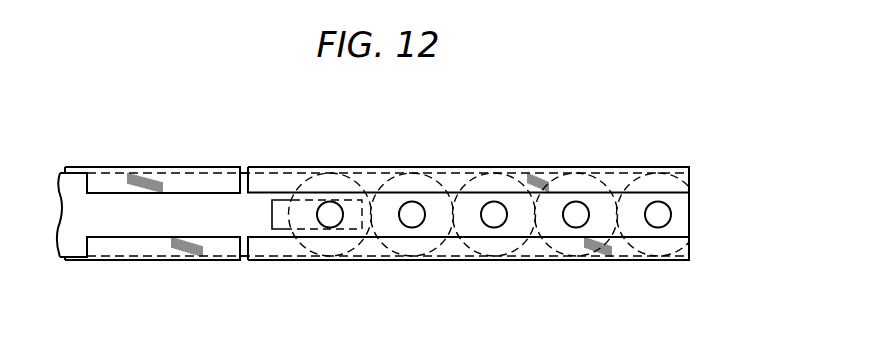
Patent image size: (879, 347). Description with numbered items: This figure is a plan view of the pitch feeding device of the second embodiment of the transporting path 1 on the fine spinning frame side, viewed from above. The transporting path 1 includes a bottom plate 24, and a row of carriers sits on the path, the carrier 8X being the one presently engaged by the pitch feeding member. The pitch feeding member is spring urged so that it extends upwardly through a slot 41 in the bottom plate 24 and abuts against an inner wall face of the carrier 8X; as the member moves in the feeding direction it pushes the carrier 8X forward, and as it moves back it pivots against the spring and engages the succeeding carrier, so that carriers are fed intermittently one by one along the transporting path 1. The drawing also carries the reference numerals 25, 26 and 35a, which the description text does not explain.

The chain assembly 1 is at (453, 161).
The end connector block 24 is at (185, 226).
The side plate / belt line 25 is at (362, 176).
The side bar 26 is at (266, 181).
The link member 41 is at (283, 208).
The roller (phantom) 8X is at (318, 193).
The pin 35a is at (308, 230).